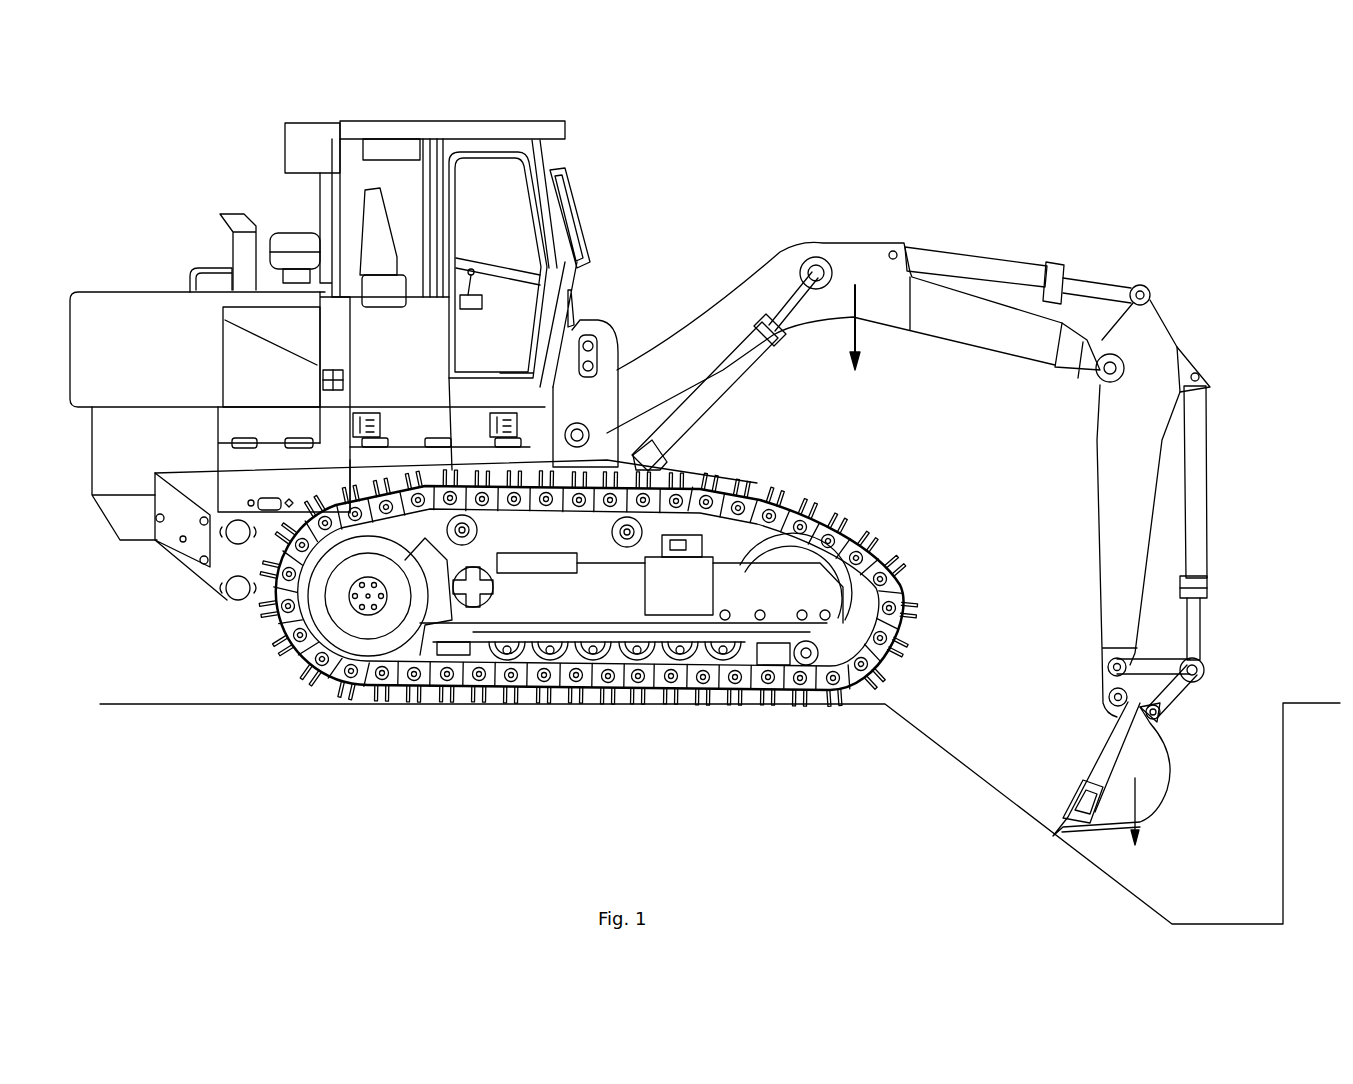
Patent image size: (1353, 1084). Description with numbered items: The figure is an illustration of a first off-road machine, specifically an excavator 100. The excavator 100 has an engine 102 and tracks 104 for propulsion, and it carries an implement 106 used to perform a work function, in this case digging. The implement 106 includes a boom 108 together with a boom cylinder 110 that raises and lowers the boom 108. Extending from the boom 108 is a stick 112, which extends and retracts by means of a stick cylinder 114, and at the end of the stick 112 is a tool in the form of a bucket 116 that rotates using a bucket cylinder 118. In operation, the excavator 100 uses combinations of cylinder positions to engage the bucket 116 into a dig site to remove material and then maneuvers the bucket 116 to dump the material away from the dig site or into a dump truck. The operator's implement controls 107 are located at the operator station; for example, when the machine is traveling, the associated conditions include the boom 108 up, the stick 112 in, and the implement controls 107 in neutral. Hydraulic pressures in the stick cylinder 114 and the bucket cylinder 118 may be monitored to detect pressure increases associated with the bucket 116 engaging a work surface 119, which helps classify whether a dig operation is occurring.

The excavator 100 is at (851, 99).
The engine 102 is at (132, 292).
The tracks 104 is at (533, 690).
The implement 106 is at (1218, 268).
The implement controls 107 is at (487, 297).
The boom 108 is at (795, 250).
The boom cylinder 110 is at (693, 424).
The stick 112 is at (1097, 412).
The stick cylinder 114 is at (1072, 272).
The bucket 116 is at (1163, 807).
The bucket cylinder 118 is at (1207, 577).
The work surface 119 is at (950, 760).